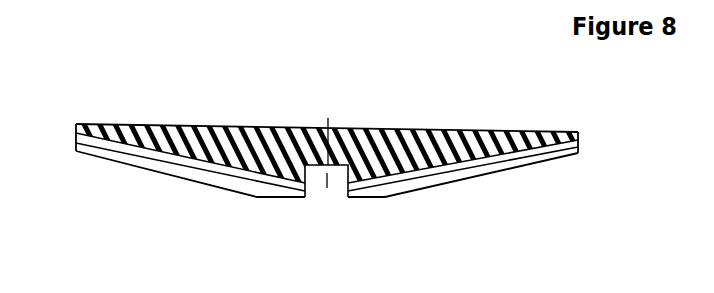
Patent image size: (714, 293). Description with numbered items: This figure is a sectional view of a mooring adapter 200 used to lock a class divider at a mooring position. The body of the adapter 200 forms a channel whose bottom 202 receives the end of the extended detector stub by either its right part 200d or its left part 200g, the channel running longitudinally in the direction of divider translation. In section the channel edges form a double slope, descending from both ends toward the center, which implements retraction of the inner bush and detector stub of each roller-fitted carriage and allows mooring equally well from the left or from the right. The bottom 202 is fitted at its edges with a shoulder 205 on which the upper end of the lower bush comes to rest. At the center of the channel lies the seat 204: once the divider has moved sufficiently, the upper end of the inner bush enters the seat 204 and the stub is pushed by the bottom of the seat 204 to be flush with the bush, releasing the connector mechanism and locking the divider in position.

The mooring adapter 200 is at (336, 115).
The left part of the channel 200g is at (75, 150).
The right part of the channel 200d is at (578, 154).
The bottom of the channel 202 is at (412, 190).
The seat 204 is at (318, 187).
The shoulder 205 is at (497, 168).